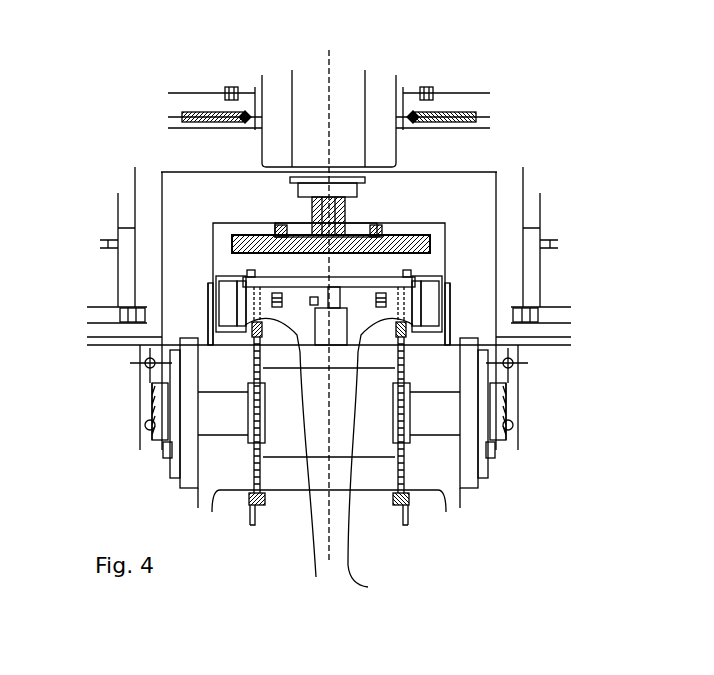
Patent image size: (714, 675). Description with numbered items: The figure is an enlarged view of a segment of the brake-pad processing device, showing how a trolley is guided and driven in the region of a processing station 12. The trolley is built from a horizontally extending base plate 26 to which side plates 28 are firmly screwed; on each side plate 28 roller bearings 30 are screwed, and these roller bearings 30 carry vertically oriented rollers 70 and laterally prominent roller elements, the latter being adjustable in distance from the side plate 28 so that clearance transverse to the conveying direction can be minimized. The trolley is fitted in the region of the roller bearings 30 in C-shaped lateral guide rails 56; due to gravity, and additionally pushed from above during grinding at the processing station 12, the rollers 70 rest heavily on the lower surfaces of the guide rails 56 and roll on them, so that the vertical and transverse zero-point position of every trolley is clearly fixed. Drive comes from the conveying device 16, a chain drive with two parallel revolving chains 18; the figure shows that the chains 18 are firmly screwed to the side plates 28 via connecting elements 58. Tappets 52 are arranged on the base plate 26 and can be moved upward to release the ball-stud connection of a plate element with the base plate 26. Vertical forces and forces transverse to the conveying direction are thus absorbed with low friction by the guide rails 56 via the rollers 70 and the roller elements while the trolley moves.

The processing station 12 is at (385, 56).
The conveying device 16 is at (329, 427).
The chain 18 is at (258, 435).
The base plate 26 is at (378, 285).
The side plate 28 is at (226, 303).
The roller bearing 30 is at (224, 311).
The tappet 52 is at (268, 300).
The lateral guide rail 56 is at (230, 330).
The connecting element 58 is at (372, 588).
The roller 70 is at (226, 316).